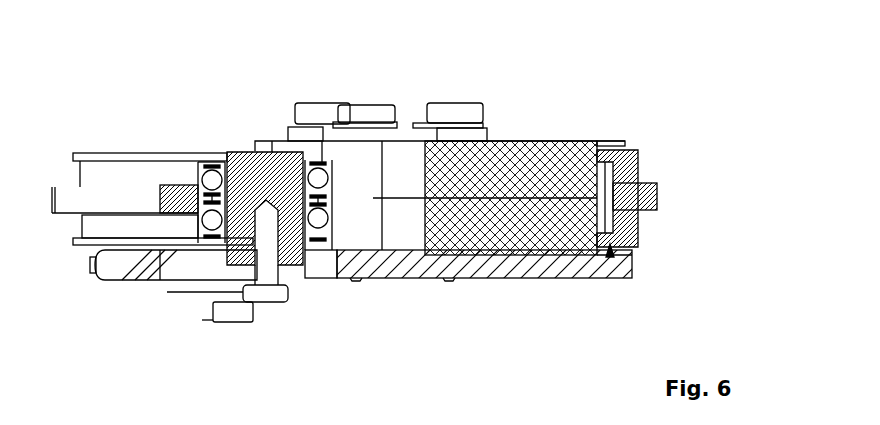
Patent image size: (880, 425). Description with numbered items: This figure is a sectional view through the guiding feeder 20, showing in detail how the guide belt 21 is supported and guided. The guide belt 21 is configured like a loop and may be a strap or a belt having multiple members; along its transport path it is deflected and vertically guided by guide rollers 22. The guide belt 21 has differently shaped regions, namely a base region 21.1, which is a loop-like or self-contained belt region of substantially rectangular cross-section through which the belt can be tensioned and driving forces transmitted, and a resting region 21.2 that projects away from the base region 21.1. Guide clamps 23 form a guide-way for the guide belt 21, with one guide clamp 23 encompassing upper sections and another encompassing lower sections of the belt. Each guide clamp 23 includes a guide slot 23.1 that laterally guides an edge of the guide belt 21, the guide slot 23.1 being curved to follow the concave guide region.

The guiding feeder 20 is at (560, 100).
The guide belt 21 is at (146, 226).
The base region 21.1 is at (192, 167).
The resting region 21.2 is at (167, 185).
The guide roller 22 is at (290, 253).
The guide clamp 23 is at (518, 142).
The guide slot 23.1 is at (612, 258).